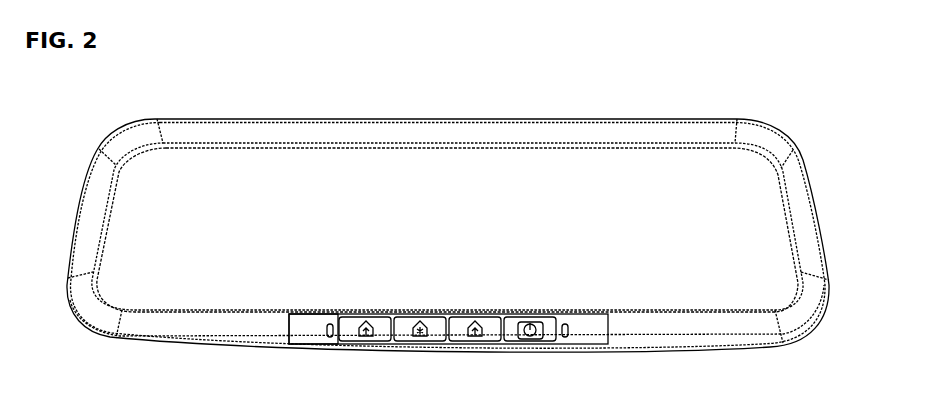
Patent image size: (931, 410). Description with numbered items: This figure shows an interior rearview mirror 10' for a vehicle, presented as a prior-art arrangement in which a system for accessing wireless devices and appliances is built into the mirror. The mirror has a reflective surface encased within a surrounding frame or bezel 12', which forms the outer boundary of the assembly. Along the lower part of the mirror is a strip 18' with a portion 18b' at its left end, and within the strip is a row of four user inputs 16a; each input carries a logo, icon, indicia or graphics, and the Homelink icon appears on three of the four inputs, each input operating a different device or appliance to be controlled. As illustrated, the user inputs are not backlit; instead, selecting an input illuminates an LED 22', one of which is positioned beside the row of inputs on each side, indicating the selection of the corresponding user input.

The interior rearview mirror 10' is at (448, 213).
The frame or bezel 12' is at (448, 253).
The user input buttons 16a is at (405, 341).
The user input panel 18' is at (447, 351).
The panel portion 18b' is at (306, 351).
The LED 22' is at (439, 356).